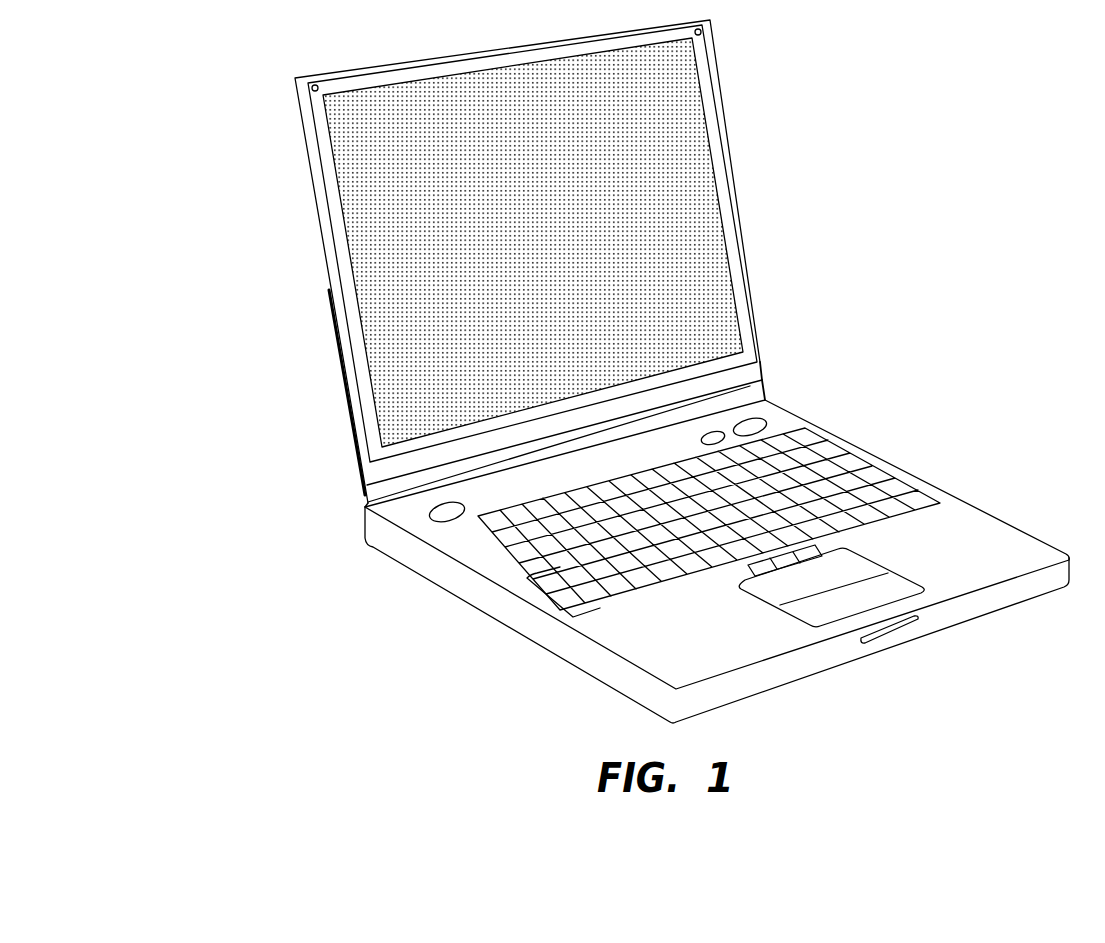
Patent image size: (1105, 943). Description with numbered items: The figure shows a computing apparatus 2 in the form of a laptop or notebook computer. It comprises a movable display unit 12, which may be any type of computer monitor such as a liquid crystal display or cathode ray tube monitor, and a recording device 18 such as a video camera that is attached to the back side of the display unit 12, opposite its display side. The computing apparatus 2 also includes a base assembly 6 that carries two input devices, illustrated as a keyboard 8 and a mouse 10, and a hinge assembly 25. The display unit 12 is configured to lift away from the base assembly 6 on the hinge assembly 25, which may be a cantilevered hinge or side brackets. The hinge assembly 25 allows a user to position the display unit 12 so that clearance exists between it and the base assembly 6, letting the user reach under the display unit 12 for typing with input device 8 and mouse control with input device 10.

The computing apparatus 2 is at (638, 371).
The recording device 18 is at (298, 205).
The display unit 12 is at (685, 113).
The hinge assembly 25 is at (383, 493).
The base assembly 6 is at (985, 520).
The input device 8 is at (508, 584).
The input device 10 is at (838, 607).